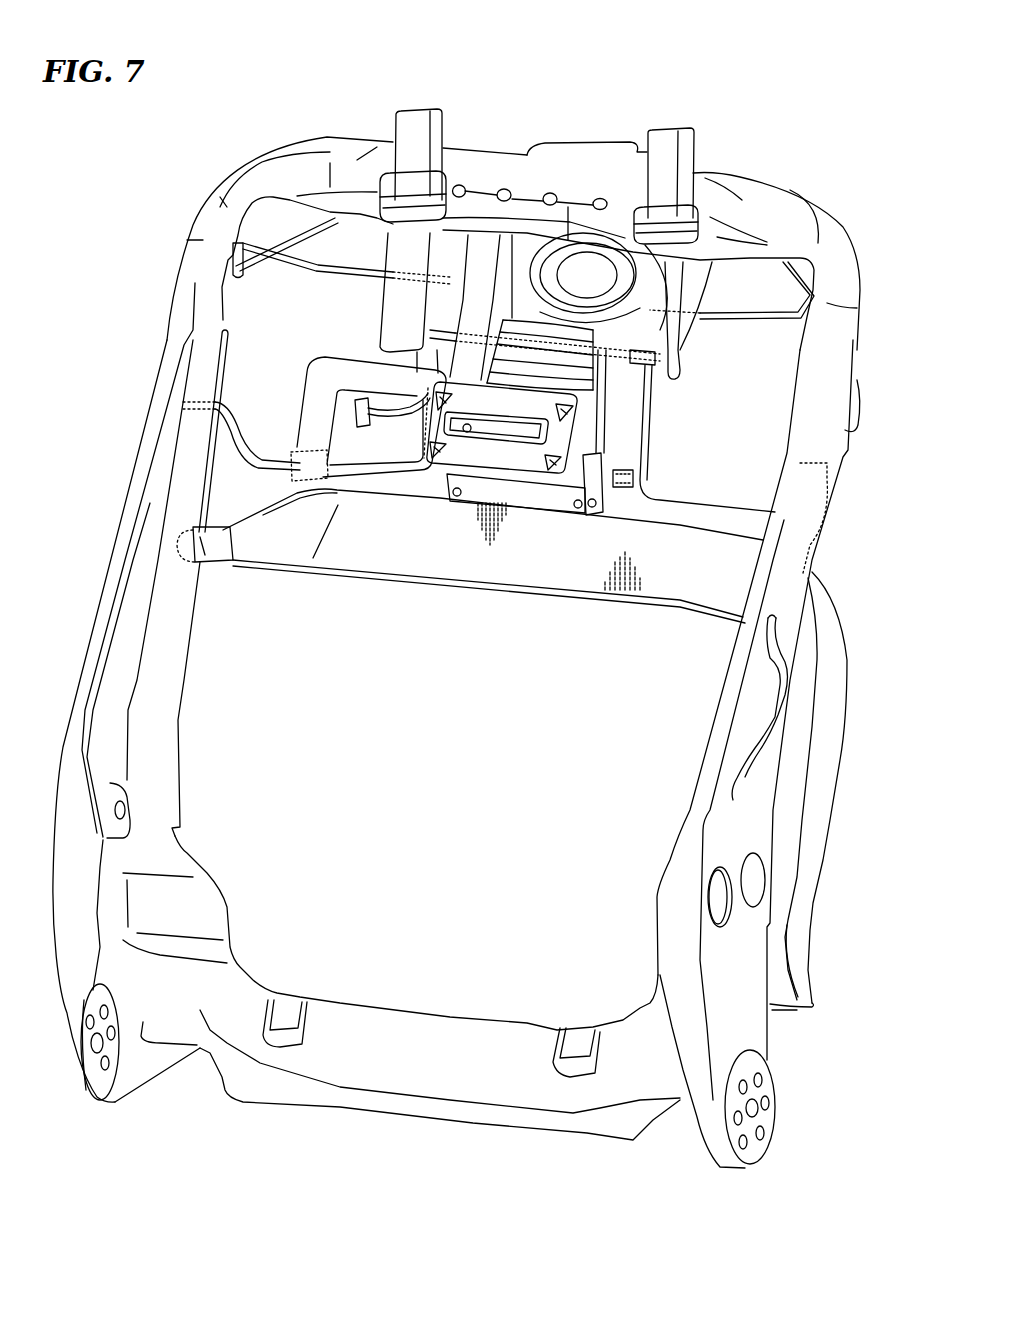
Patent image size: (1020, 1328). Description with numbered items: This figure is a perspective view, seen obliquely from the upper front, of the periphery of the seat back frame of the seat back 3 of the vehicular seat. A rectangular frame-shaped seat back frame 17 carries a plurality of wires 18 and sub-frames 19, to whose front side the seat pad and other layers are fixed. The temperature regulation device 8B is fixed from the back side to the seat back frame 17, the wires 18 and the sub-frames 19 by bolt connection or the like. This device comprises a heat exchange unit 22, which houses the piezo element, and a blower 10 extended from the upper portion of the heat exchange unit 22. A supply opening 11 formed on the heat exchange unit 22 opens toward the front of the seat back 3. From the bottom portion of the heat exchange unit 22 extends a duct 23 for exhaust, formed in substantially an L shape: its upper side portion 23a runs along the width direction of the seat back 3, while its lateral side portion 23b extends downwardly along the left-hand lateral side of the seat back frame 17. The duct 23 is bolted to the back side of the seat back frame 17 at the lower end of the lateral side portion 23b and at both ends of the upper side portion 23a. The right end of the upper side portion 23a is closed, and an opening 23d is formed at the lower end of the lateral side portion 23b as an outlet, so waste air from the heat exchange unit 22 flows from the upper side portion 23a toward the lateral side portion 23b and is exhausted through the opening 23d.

The seat back 3 is at (529, 117).
The temperature regulation device 8B is at (578, 268).
The blower 10 is at (601, 266).
The supply opening 11 is at (462, 428).
The seat back frame 17 is at (800, 592).
The wires 18 is at (763, 318).
The sub-frames 19 is at (700, 280).
The heat exchange unit 22 is at (580, 459).
The duct 23 is at (392, 500).
The upper side portion 23a is at (342, 550).
The lateral side portion 23b is at (818, 824).
The opening 23d is at (795, 1012).